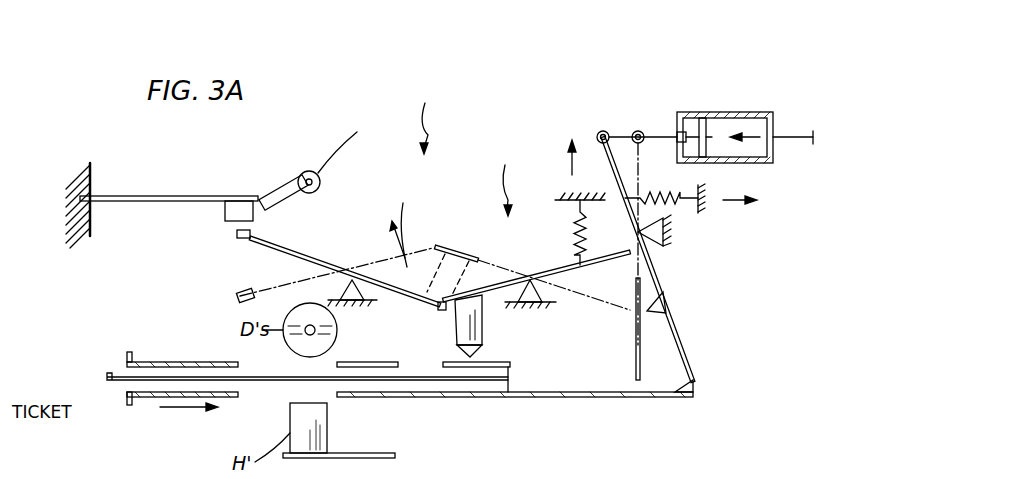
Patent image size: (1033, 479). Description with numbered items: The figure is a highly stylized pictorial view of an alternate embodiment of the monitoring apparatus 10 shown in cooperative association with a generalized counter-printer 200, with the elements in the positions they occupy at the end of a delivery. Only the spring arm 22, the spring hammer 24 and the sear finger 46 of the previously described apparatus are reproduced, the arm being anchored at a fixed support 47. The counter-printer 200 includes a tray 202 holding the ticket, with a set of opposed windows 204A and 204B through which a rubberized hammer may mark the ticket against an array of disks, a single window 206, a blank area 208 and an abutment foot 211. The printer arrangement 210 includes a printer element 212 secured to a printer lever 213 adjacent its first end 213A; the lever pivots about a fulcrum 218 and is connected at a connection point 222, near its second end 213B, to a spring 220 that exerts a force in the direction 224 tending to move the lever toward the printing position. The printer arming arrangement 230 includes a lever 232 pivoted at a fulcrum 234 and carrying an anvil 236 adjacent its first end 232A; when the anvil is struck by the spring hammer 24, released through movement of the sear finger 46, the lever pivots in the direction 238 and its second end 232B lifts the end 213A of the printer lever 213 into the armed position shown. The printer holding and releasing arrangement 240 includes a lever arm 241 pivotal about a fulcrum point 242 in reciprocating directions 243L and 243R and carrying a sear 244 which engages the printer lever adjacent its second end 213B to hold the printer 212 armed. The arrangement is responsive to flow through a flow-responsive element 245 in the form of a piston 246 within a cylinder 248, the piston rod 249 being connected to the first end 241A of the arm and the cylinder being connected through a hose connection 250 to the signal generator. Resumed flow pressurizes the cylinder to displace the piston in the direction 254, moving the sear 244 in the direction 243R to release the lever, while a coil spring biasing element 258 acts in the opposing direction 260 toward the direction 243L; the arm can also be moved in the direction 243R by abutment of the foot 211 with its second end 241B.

The monitoring apparatus 10 is at (427, 118).
The spring arm 22 is at (185, 196).
The spring hammer 24 is at (259, 197).
The sear finger 46 is at (350, 146).
The fixed wall 47 is at (92, 175).
The counter-printer 200 is at (182, 430).
The tray 202 is at (160, 362).
The window 204A is at (238, 362).
The window 204B is at (238, 396).
The single window 206 is at (400, 366).
The blank area 208 is at (487, 352).
The printer arrangement 210 is at (506, 180).
The abutment foot 211 is at (695, 396).
The printer element 212 is at (485, 330).
The printer lever 213 is at (522, 278).
The first end of printer lever 213A is at (435, 245).
The second end of printer lever 213B is at (635, 290).
The fulcrum 218 is at (552, 304).
The spring 220 is at (575, 240).
The connection point 222 is at (560, 270).
The biasing direction 224 is at (566, 168).
The printer arming arrangement 230 is at (312, 276).
The lever 232 is at (348, 274).
The first end of lever 232A is at (238, 241).
The second end of lever 232B is at (440, 308).
The fulcrum 234 is at (353, 301).
The anvil 236 is at (237, 234).
The pivoting direction 238 is at (403, 224).
The printer holding and releasing arrangement 240 is at (768, 284).
The lever arm 241 is at (658, 276).
The first end of lever arm 241A is at (604, 131).
The second end of lever arm 241B is at (697, 378).
The fulcrum point 242 is at (676, 238).
The leftward direction 243L is at (803, 347).
The rightward direction 243R is at (758, 385).
The sear 244 is at (668, 303).
The flow-responsive element 245 is at (812, 93).
The piston 246 is at (700, 117).
The cylinder 248 is at (760, 161).
The piston rod 249 is at (641, 132).
The connection 250 is at (812, 142).
The piston displacement direction 254 is at (748, 134).
The biasing element 258 is at (688, 196).
The spring biasing direction 260 is at (738, 202).